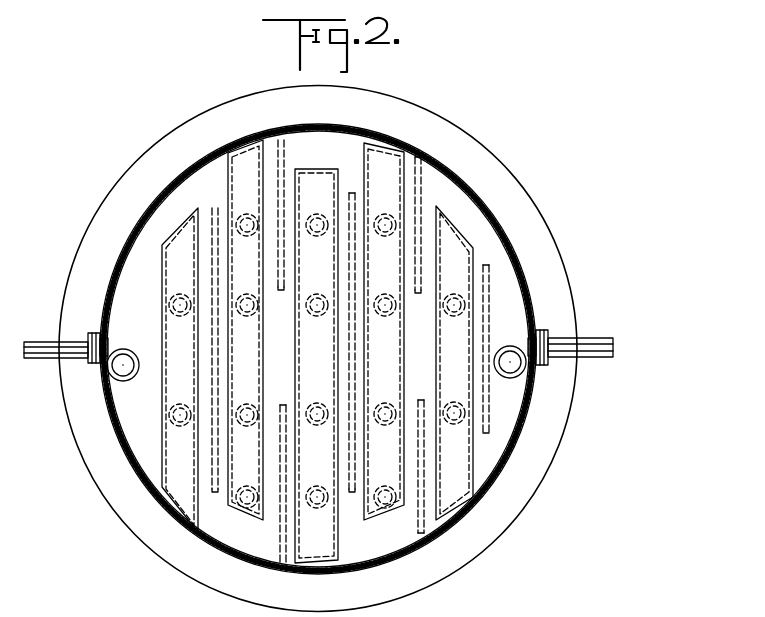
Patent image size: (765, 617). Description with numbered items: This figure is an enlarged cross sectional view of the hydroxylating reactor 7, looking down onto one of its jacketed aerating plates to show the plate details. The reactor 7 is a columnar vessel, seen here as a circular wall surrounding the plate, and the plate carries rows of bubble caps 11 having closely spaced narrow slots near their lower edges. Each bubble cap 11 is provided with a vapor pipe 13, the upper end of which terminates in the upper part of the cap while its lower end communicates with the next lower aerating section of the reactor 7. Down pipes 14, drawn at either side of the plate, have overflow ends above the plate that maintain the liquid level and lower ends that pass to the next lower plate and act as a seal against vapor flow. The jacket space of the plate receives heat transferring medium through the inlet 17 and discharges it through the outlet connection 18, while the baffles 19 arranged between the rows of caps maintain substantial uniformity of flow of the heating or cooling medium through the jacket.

The reactor 7 is at (497, 218).
The bubble caps 11 is at (298, 363).
The vapor pipes 13 is at (325, 504).
The down pipes 14 is at (128, 349).
The inlet 17 is at (591, 338).
The outlet connection 18 is at (40, 342).
The baffles 19 is at (214, 208).